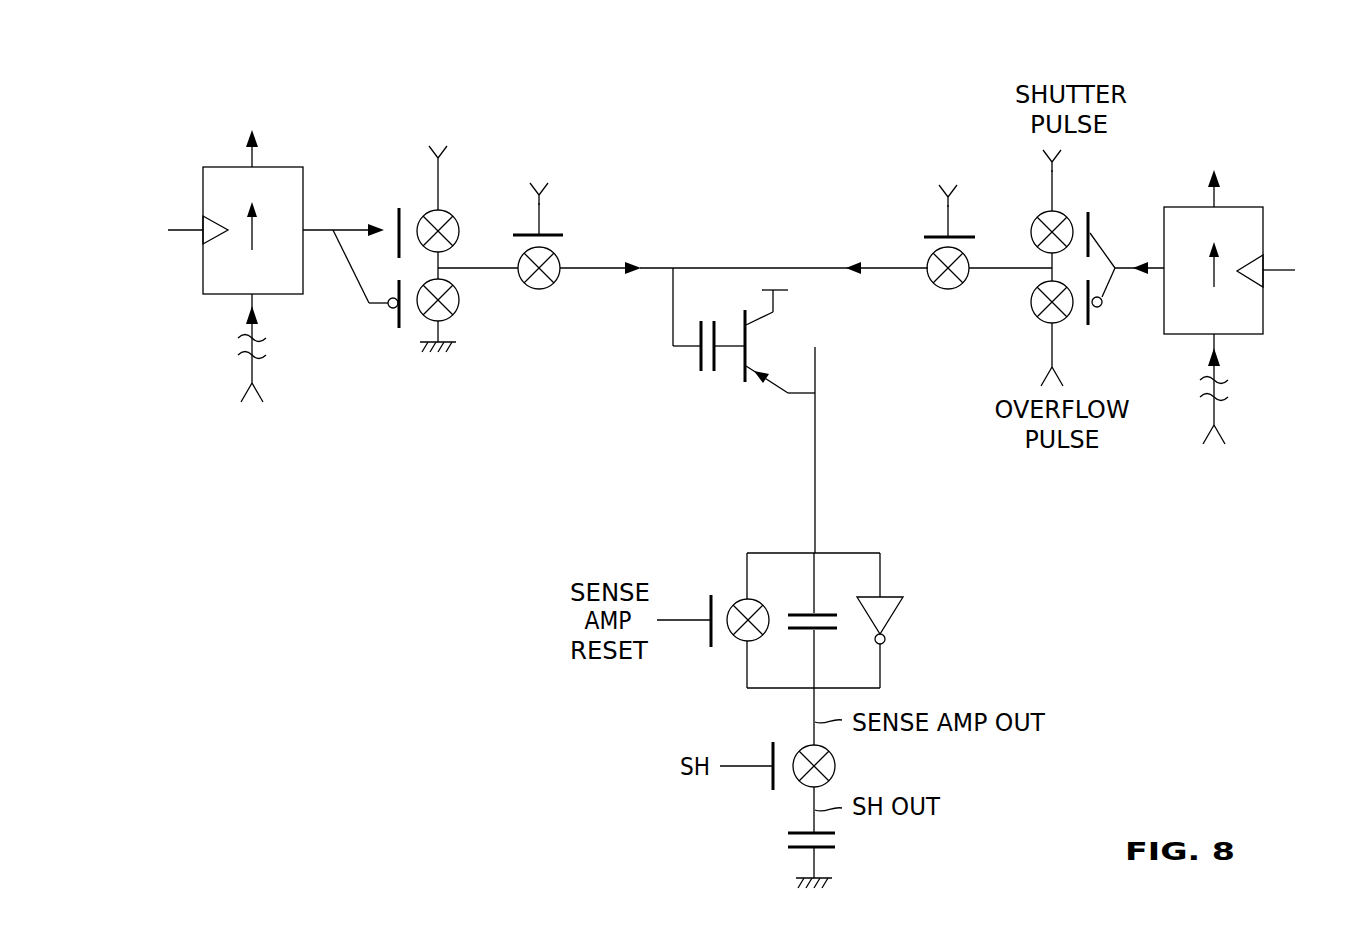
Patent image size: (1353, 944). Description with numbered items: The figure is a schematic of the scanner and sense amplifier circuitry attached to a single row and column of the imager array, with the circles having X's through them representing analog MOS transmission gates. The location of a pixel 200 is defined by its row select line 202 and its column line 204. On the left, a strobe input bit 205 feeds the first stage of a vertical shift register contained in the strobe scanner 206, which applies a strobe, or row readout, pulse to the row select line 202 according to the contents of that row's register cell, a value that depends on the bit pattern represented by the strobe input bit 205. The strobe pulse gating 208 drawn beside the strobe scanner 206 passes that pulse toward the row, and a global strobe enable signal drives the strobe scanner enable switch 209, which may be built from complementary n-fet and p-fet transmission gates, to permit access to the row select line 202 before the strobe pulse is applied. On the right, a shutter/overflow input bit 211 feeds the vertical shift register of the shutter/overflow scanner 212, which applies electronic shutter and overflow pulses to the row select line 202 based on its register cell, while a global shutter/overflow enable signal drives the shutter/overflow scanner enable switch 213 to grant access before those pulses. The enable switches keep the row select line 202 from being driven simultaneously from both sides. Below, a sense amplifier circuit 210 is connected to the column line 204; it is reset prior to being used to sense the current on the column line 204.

The pixel 200 is at (699, 363).
The row select line 202 is at (712, 267).
The column line 204 is at (816, 521).
The strobe input bit 205 is at (249, 400).
The strobe scanner 206 is at (203, 266).
The strobe pulse transistor pair 208 is at (405, 201).
The strobe scanner enable switch 209 is at (553, 185).
The sense amplifier circuit 210 is at (895, 618).
The shutter/overflow input bit 211 is at (1219, 443).
The shutter/overflow scanner 212 is at (1263, 318).
The shutter/overflow scanner enable switch 213 is at (937, 186).